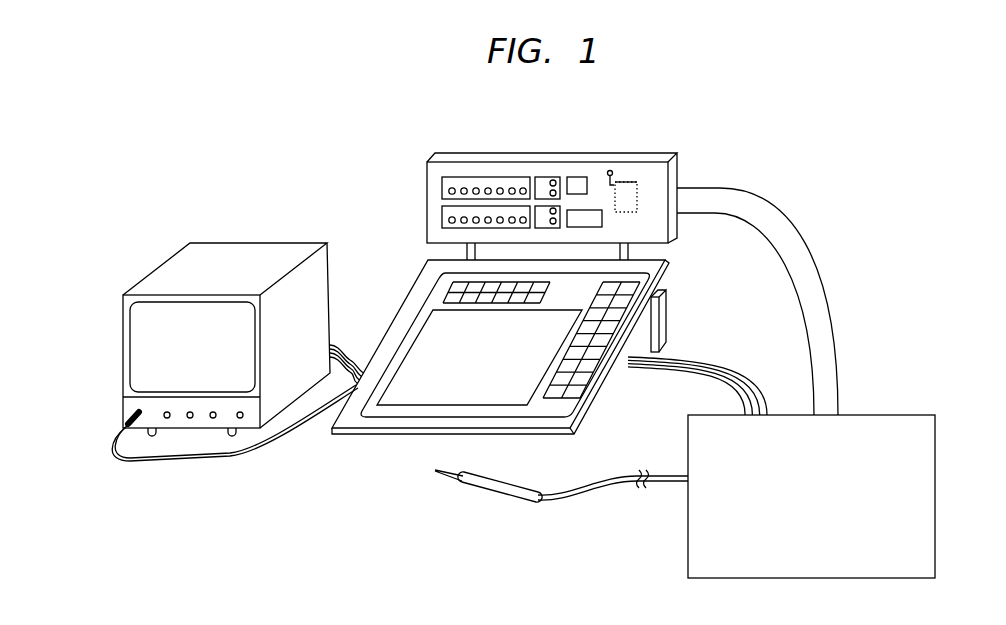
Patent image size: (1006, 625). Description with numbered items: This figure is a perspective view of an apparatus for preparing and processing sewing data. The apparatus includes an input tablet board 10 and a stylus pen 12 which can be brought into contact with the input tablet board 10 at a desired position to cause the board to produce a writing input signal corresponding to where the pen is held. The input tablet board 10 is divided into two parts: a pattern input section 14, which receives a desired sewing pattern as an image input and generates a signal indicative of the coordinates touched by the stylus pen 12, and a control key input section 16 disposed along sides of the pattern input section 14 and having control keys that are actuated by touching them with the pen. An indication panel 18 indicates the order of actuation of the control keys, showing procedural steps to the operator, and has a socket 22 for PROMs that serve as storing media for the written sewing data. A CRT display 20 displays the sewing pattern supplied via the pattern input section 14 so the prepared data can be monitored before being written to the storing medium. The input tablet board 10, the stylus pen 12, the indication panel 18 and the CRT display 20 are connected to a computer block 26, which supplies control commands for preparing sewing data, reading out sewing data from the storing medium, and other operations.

The input tablet board 10 is at (549, 360).
The stylus pen 12 is at (483, 485).
The pattern input section 14 is at (486, 405).
The control key input section 16 is at (583, 303).
The indication panel 18 is at (632, 257).
The CRT display 20 is at (165, 323).
The socket 22 is at (625, 183).
The computer block 26 is at (940, 528).